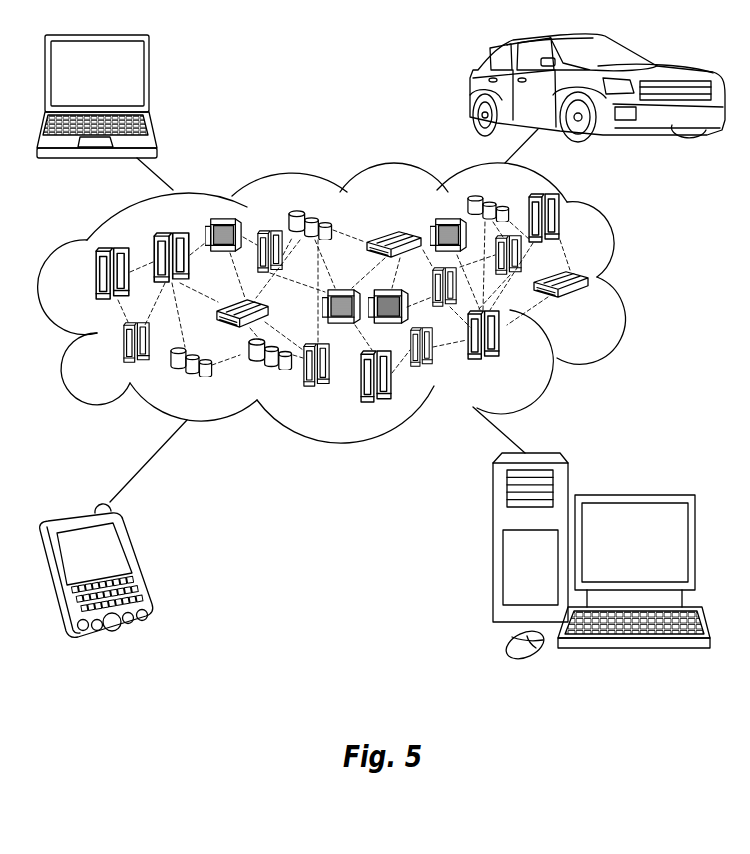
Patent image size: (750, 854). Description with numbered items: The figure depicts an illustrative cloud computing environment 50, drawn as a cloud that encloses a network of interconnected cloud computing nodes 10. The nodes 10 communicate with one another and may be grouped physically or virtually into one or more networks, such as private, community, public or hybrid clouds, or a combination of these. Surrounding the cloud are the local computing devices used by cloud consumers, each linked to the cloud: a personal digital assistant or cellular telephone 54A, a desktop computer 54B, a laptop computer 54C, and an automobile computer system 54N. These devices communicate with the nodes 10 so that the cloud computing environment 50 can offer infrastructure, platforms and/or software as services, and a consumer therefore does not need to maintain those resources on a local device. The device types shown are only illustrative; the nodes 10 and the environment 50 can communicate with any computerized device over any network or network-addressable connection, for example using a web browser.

The cloud computing environment 50 is at (633, 283).
The cloud computing nodes 10 is at (604, 313).
The personal digital assistant or cellular telephone 54A is at (138, 560).
The desktop computer 54B is at (650, 494).
The laptop computer 54C is at (150, 68).
The automobile computer system 54N is at (470, 80).